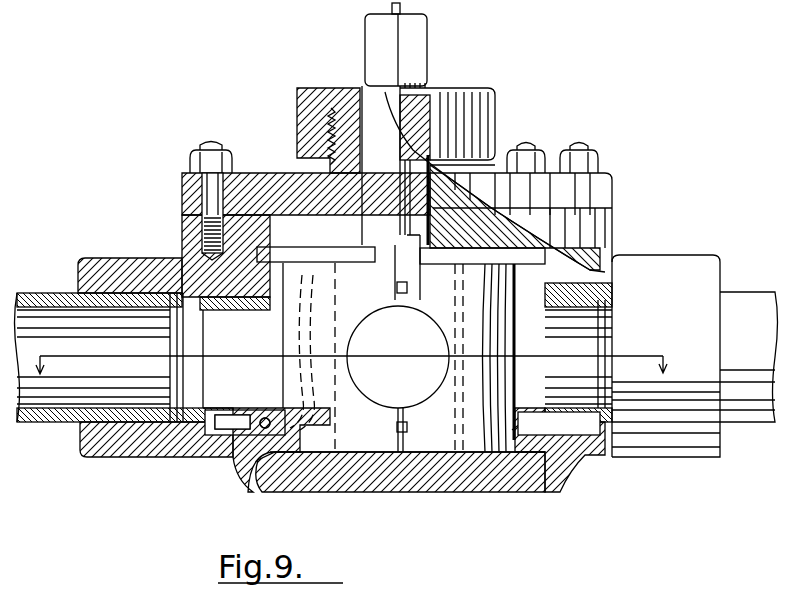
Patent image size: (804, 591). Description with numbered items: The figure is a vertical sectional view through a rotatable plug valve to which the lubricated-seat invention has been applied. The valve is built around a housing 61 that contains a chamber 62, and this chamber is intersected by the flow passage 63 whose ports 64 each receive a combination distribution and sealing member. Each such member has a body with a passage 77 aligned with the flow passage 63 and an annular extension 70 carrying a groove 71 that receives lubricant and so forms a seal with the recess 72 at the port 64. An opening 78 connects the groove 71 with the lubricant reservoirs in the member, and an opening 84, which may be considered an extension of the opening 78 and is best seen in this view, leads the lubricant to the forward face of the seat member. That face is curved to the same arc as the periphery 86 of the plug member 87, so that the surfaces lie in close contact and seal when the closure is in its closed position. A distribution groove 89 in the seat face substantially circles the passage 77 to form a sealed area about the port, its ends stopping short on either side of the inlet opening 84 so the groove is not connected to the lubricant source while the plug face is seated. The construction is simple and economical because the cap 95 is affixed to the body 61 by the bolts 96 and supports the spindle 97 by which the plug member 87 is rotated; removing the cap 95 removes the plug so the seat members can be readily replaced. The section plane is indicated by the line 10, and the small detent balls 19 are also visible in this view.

The section line 10- 10 is at (362, 379).
The ball detent 19 is at (250, 455).
The housing 61 is at (447, 477).
The chamber 62 is at (347, 455).
The flow passage 63 is at (55, 420).
The ports 64 is at (200, 377).
The annular extension 70 is at (613, 316).
The groove 71 is at (205, 455).
The recess 72 is at (570, 453).
The passage 77 is at (225, 405).
The opening 78 is at (215, 452).
The opening 84 is at (270, 455).
The periphery 86 is at (436, 372).
The plug member 87 is at (386, 269).
The distribution groove 89 is at (401, 349).
The cap 95 is at (270, 185).
The bolts 96 is at (212, 193).
The spindle 97 is at (377, 113).